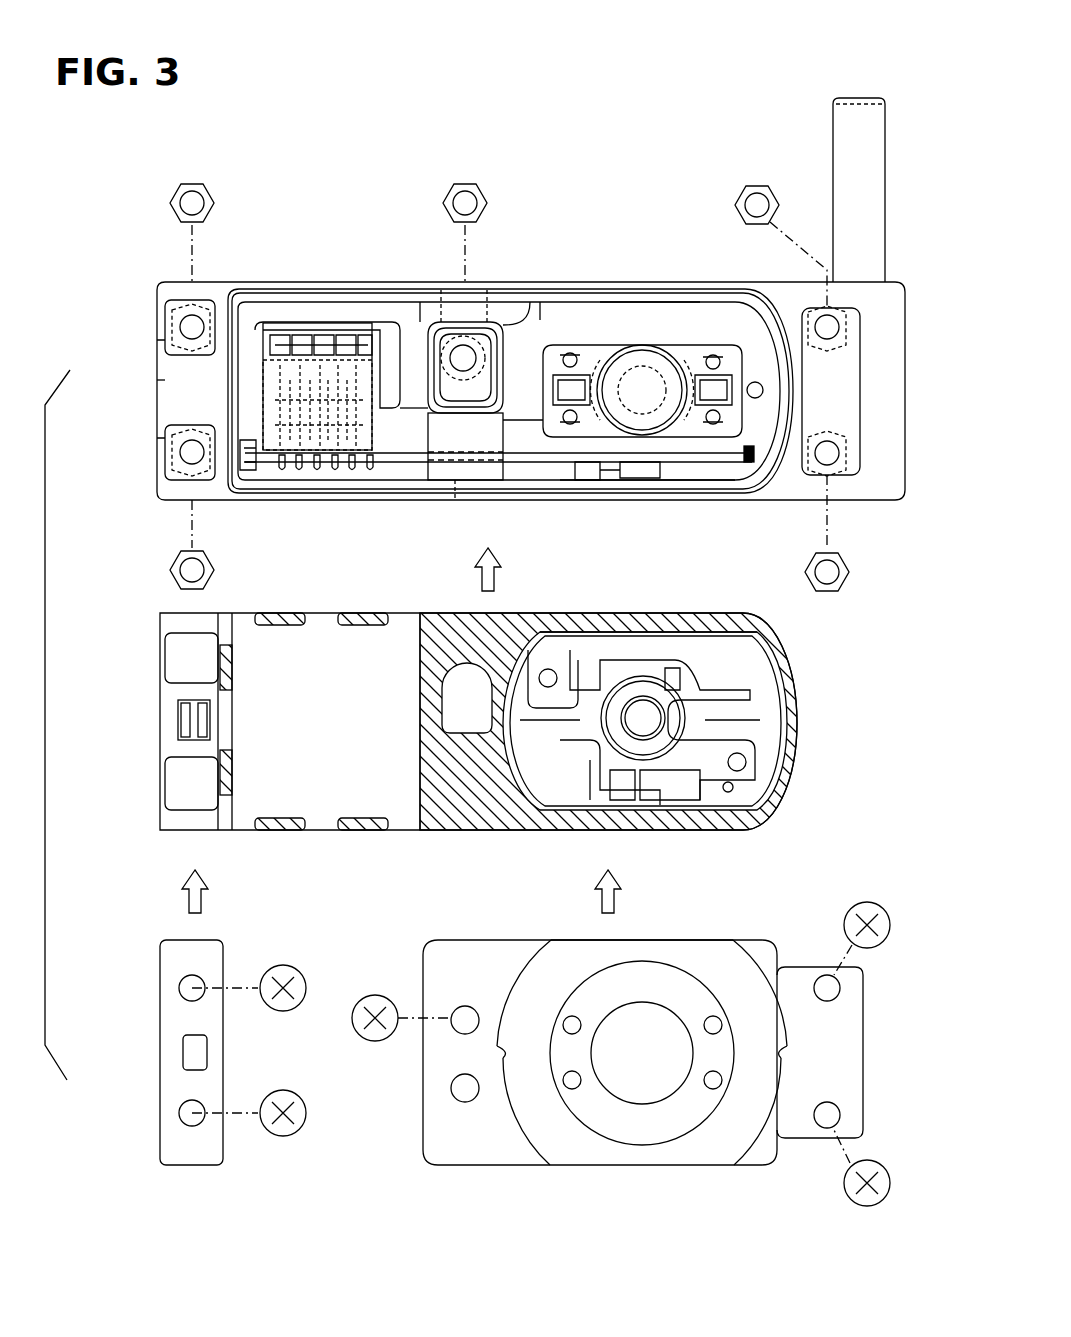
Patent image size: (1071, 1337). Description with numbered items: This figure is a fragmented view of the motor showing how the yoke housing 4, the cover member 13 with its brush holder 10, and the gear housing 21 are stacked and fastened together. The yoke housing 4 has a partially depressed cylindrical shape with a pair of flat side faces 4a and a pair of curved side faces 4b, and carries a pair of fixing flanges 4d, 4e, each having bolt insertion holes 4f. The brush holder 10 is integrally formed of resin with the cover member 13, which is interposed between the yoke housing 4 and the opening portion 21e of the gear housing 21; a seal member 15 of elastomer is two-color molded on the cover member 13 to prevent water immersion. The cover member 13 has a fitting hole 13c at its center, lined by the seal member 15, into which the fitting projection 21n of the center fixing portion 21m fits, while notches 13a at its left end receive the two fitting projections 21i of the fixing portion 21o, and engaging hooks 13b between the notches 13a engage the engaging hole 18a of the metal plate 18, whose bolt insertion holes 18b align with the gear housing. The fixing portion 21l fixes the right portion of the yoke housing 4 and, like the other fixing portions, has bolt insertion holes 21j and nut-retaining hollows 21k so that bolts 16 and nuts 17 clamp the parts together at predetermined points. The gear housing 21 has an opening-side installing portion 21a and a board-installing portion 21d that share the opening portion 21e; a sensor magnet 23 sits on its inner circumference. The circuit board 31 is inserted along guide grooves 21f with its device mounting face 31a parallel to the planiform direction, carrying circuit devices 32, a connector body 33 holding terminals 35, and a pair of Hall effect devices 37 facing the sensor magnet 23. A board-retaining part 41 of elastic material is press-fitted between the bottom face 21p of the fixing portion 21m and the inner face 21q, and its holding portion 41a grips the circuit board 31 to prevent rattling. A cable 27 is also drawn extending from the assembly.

The yoke housing 4 is at (864, 1012).
The flat side faces 4a is at (704, 940).
The curved side faces 4b is at (785, 1069).
The fixing flange 4d is at (855, 1050).
The fixing flange 4e is at (425, 1100).
The bolt insertion holes 4f is at (472, 1008).
The brush holder 10 is at (778, 704).
The cover member 13 is at (705, 612).
The notches 13a is at (178, 636).
The engaging hooks 13b is at (203, 742).
The fitting hole 13c is at (440, 700).
The seal member 15 is at (630, 612).
The bolts 16 is at (352, 1024).
The nuts 17 is at (208, 190).
The metal plate 18 is at (222, 964).
The engaging hole 18a is at (208, 1056).
The bolt insertion holes 18b is at (182, 984).
The gear housing 21 is at (700, 285).
The opening-side installing portion 21a is at (578, 300).
The board-installing portion 21d is at (267, 310).
The opening portion 21e is at (640, 298).
The guide grooves 21f is at (258, 472).
The fitting projections 21i is at (162, 346).
The bolt insertion holes 21j is at (180, 328).
The nut-retaining hollows 21k is at (172, 297).
The fixing portion 21l is at (872, 358).
The fixing portion 21m is at (422, 312).
The fitting projection 21n is at (545, 362).
The fixing portion 21o is at (162, 390).
The bottom face 21p is at (540, 468).
The inner face 21q is at (487, 486).
The sensor magnet 23 is at (636, 354).
The flexible cable 27 is at (868, 106).
The circuit board 31 is at (540, 466).
The device mounting face 31a is at (418, 448).
The circuit devices 32 is at (260, 402).
The connector body 33 is at (380, 325).
The terminals 35 is at (355, 334).
The Hall effect devices 37 is at (662, 478).
The board-retaining part 41 is at (438, 484).
The holding portion 41a is at (456, 484).